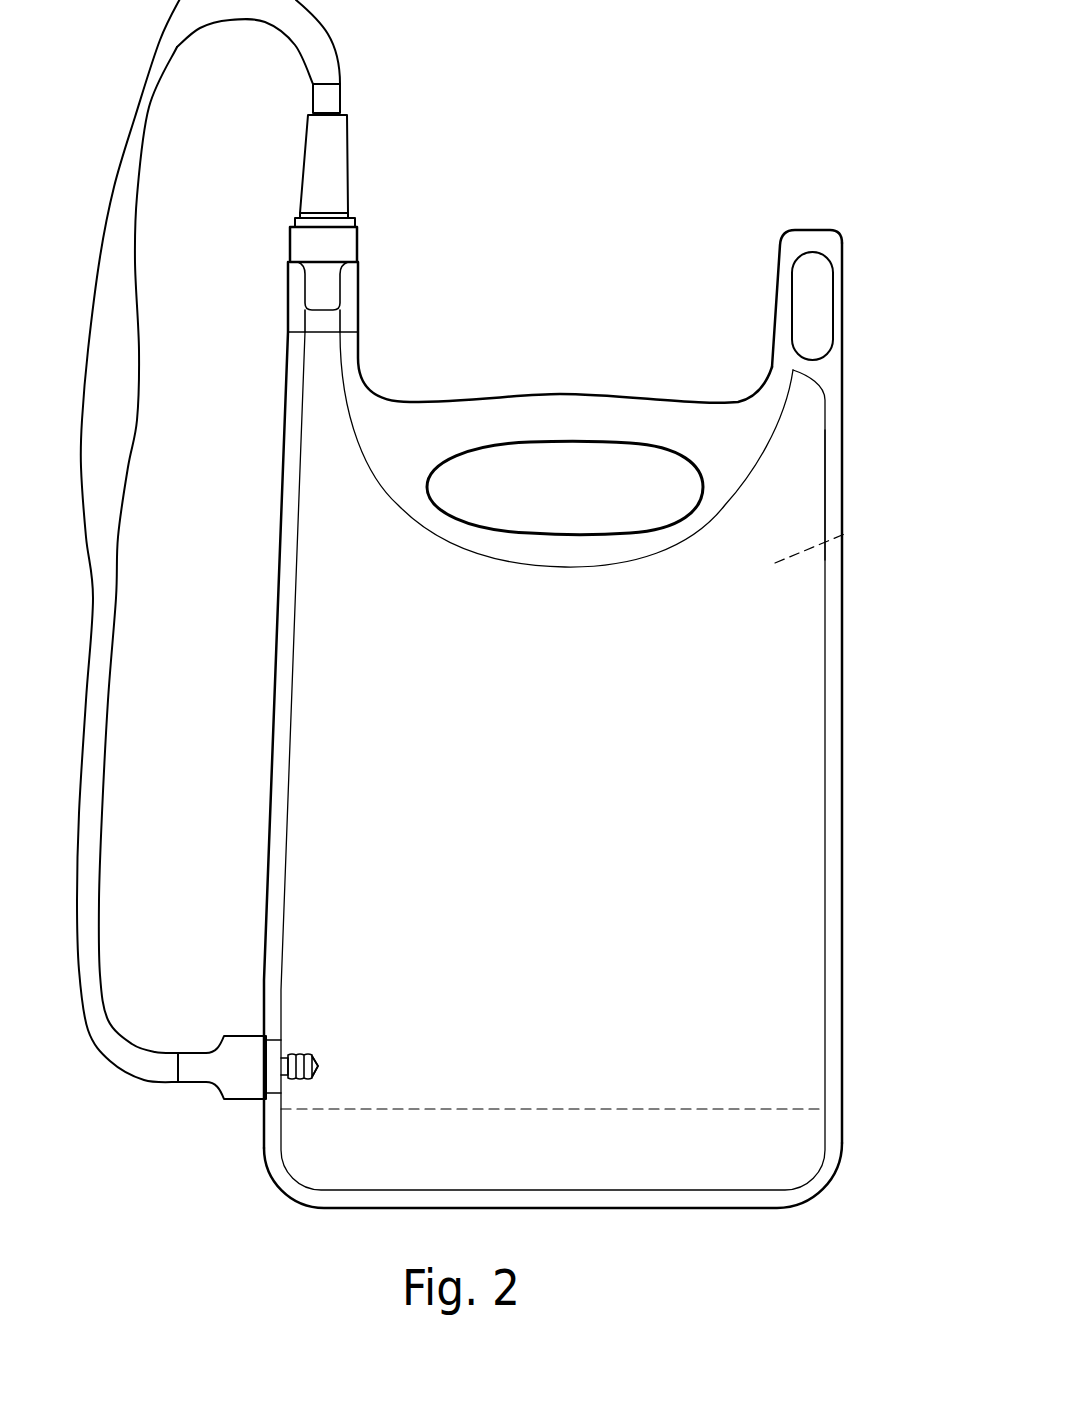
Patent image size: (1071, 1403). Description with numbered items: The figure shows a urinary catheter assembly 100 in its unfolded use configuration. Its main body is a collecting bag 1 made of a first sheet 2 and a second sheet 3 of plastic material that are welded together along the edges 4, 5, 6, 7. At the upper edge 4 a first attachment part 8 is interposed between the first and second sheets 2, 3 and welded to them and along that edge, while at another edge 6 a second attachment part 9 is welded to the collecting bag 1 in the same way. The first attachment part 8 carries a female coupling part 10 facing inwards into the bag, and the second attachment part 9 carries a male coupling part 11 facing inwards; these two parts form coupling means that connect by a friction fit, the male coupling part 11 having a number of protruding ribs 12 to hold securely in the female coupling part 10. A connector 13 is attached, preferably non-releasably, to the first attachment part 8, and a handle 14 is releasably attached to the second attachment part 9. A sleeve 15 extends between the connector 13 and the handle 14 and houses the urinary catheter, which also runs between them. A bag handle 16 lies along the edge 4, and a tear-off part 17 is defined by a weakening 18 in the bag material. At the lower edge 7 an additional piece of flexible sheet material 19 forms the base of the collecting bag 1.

The urinary catheter assembly 100 is at (618, 221).
The collecting bag 1 is at (569, 763).
The first sheet 2 is at (763, 704).
The second sheet 3 is at (843, 535).
The edge 4 is at (432, 398).
The edge 5 is at (850, 646).
The edge 6 is at (266, 716).
The lower edge 7 is at (643, 1208).
The first attachment part 8 is at (345, 245).
The second attachment part 9 is at (275, 1050).
The female coupling part 10 is at (327, 303).
The male coupling part 11 is at (319, 1063).
The protruding ribs 12 is at (298, 1079).
The connector 13 is at (336, 164).
The handle 14 is at (245, 1053).
The sleeve 15 is at (127, 460).
The bag handle 16 is at (584, 496).
The tear-off part 17 is at (837, 353).
The weakening 18 is at (845, 413).
The additional piece of flexible sheet material 19 is at (690, 1104).